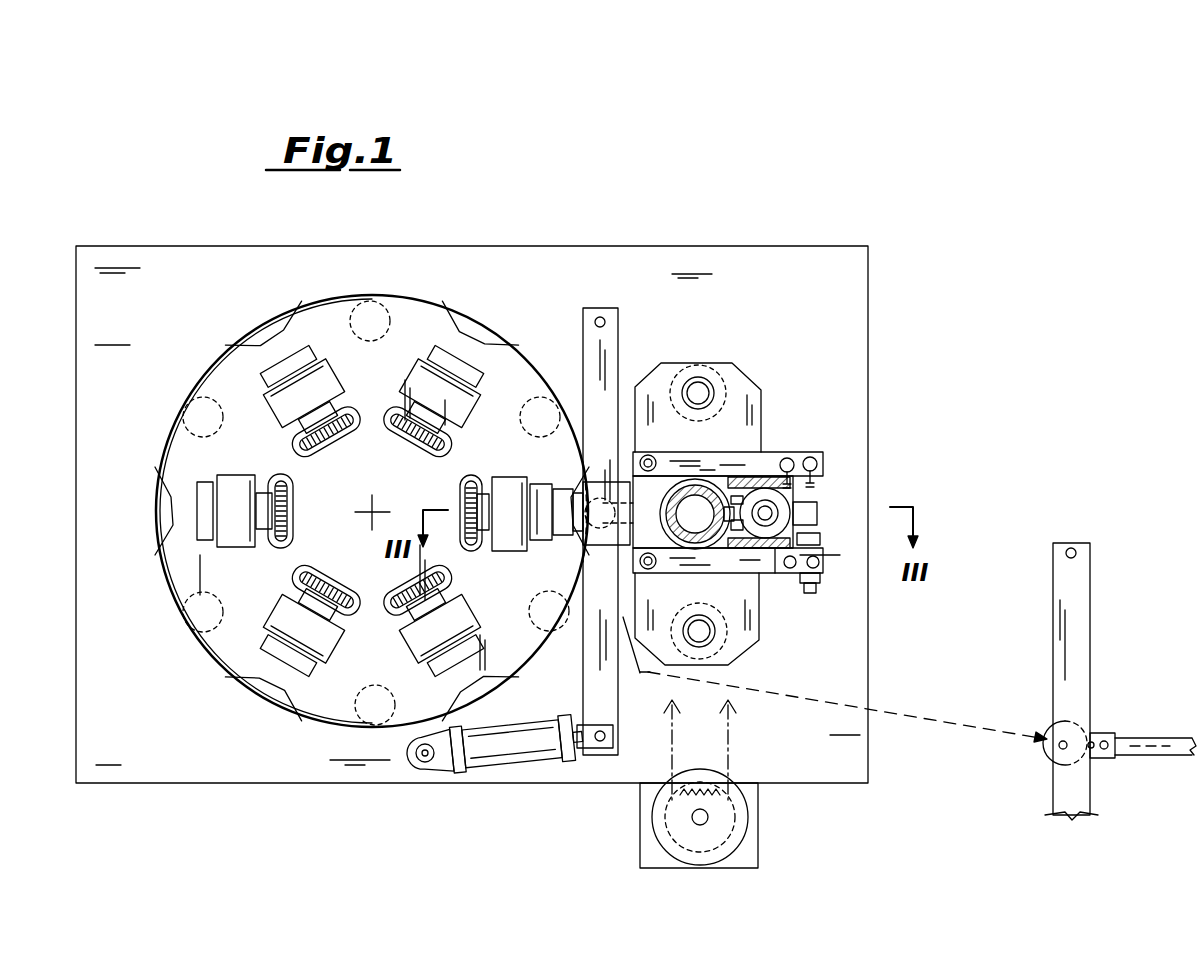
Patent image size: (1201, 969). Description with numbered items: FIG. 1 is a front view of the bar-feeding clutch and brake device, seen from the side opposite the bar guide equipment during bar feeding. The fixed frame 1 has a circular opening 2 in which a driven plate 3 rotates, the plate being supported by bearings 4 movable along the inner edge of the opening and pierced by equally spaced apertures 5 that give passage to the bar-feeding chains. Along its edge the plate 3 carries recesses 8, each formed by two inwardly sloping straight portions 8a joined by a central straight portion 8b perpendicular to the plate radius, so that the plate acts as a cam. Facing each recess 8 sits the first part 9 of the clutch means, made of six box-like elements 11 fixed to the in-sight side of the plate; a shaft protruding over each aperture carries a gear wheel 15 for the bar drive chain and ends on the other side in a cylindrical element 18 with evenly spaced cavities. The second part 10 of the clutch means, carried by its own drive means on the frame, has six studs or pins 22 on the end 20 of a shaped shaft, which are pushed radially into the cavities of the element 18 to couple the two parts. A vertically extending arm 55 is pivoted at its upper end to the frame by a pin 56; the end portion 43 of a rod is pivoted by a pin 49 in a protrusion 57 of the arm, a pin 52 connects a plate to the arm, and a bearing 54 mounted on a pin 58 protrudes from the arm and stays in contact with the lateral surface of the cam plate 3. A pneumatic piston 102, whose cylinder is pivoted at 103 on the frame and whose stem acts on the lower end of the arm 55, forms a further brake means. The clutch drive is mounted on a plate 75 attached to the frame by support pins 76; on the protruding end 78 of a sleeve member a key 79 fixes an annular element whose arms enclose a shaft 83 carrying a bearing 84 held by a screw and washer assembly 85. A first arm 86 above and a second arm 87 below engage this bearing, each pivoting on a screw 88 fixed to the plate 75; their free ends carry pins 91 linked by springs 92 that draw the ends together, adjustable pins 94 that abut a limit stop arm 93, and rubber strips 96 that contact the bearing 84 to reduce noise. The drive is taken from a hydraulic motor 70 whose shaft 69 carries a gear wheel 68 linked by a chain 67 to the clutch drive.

The fixed frame 1 is at (106, 255).
The circular opening 2 is at (505, 330).
The plate 3 is at (427, 328).
The bearings 4 is at (385, 310).
The apertures 5 is at (357, 417).
The recesses 8 is at (275, 330).
The straight portions 8a is at (287, 306).
The straight portion 8b is at (268, 312).
The first part of the clutch means 9 is at (334, 340).
The second part of the clutch means 10 is at (551, 465).
The box-like elements 11 is at (273, 398).
The gear wheel 15 is at (291, 492).
The cylindrical element 18 is at (205, 496).
The end of shaped shaft 20 is at (567, 548).
The studs or pins 22 is at (545, 476).
The end portion of rod 43 is at (1130, 738).
The pin 49 is at (1104, 740).
The pin 52 is at (1090, 750).
The bearing 54 is at (1046, 750).
The arm 55 is at (619, 338).
The pin 56 is at (600, 316).
The protrusion 57 is at (1108, 760).
The pin 58 is at (1061, 750).
The chain 67 is at (736, 745).
The gear wheel 68 is at (735, 822).
The shaft 69 is at (693, 820).
The hydraulic motor 70 is at (722, 850).
The plate 75 is at (737, 378).
The support pins 76 is at (699, 385).
The end of sleeve member 78 is at (745, 490).
The key 79 is at (750, 567).
The shaft 83 is at (712, 550).
The bearing 84 is at (766, 508).
The screw and washer assembly 85 is at (820, 457).
The first arm 86 is at (712, 480).
The second arm 87 is at (718, 568).
The screw 88 is at (652, 462).
The pins 91 is at (827, 463).
The springs 92 is at (880, 482).
The limit stop arm 93 is at (822, 513).
The pins 94 is at (822, 562).
The rubber strips 96 is at (810, 572).
The pneumatic piston 102 is at (497, 752).
The pivot 103 is at (423, 762).